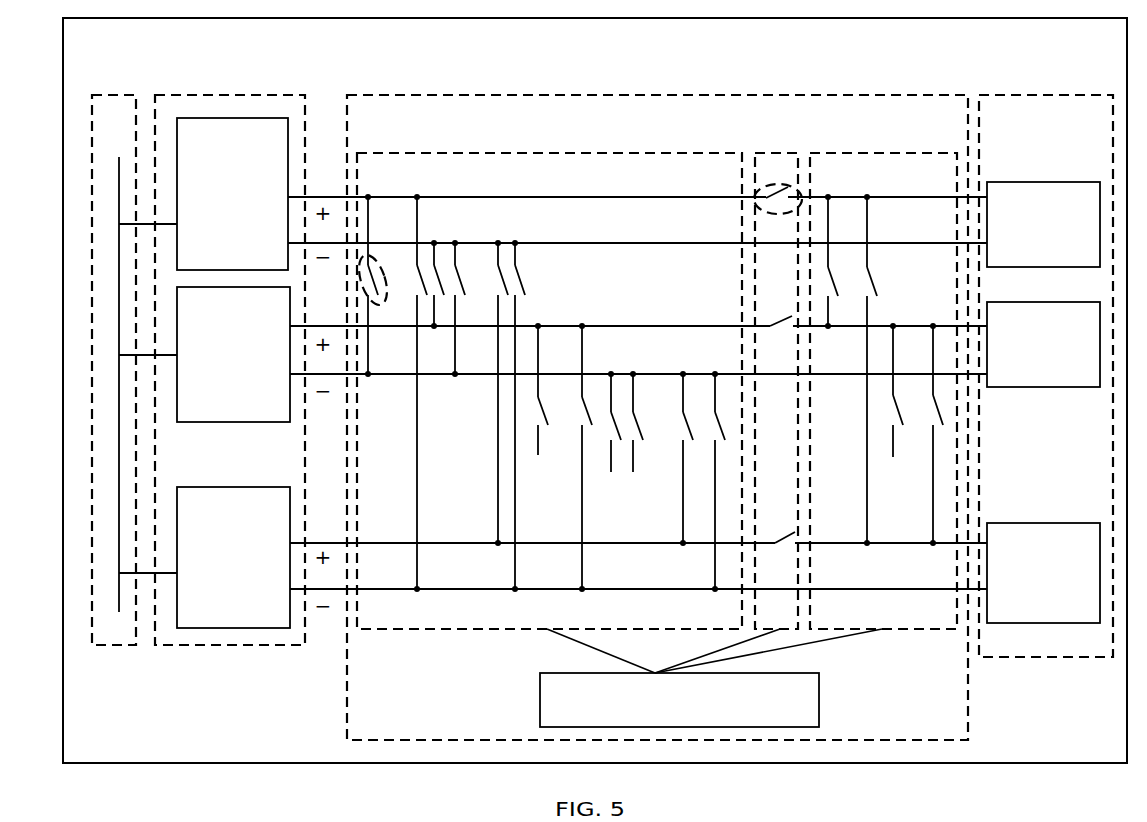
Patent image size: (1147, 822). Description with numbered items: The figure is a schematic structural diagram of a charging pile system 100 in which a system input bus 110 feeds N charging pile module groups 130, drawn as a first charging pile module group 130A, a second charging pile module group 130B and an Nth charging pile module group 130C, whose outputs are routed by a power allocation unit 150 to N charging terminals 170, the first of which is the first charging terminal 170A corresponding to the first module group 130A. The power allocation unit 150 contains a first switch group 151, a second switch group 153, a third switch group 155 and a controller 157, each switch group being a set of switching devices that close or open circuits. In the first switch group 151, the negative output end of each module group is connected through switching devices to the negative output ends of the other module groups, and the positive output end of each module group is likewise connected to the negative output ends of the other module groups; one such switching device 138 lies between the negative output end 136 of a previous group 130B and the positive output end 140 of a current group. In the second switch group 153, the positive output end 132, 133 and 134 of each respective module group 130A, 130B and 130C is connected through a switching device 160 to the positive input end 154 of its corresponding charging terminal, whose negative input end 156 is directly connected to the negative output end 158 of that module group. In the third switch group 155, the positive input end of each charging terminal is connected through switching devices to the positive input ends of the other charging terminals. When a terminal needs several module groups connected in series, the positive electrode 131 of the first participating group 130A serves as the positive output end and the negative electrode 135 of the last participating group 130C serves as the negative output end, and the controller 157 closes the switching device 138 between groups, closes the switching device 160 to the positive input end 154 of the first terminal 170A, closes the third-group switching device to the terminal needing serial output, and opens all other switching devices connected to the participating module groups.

The charging pile system 100 is at (595, 390).
The system input bus 110 is at (137, 93).
The charging pile module groups 130 is at (290, 93).
The charging pile module group 1 130A is at (232, 194).
The charging pile module group 2 130B is at (233, 354).
The charging pile module group N 130C is at (233, 557).
The positive electrode 131 is at (288, 197).
The positive output end 132 is at (307, 198).
The positive output end 133 is at (329, 322).
The positive output end 134 is at (403, 543).
The negative electrode 135 is at (282, 588).
The negative output end 136 is at (366, 375).
The switching device 138 is at (381, 285).
The positive output end 140 is at (368, 197).
The power allocation unit 150 is at (422, 95).
The first switch group 151 is at (548, 373).
The second switch group 153 is at (764, 375).
The positive input end 154 is at (987, 198).
The third switch group 155 is at (882, 153).
The negative input end 156 is at (987, 245).
The controller 157 is at (820, 703).
The negative output end 158 is at (378, 263).
The switching device 160 is at (752, 190).
The charging terminals 170 is at (1023, 95).
The charging terminal 1 170A is at (1043, 224).